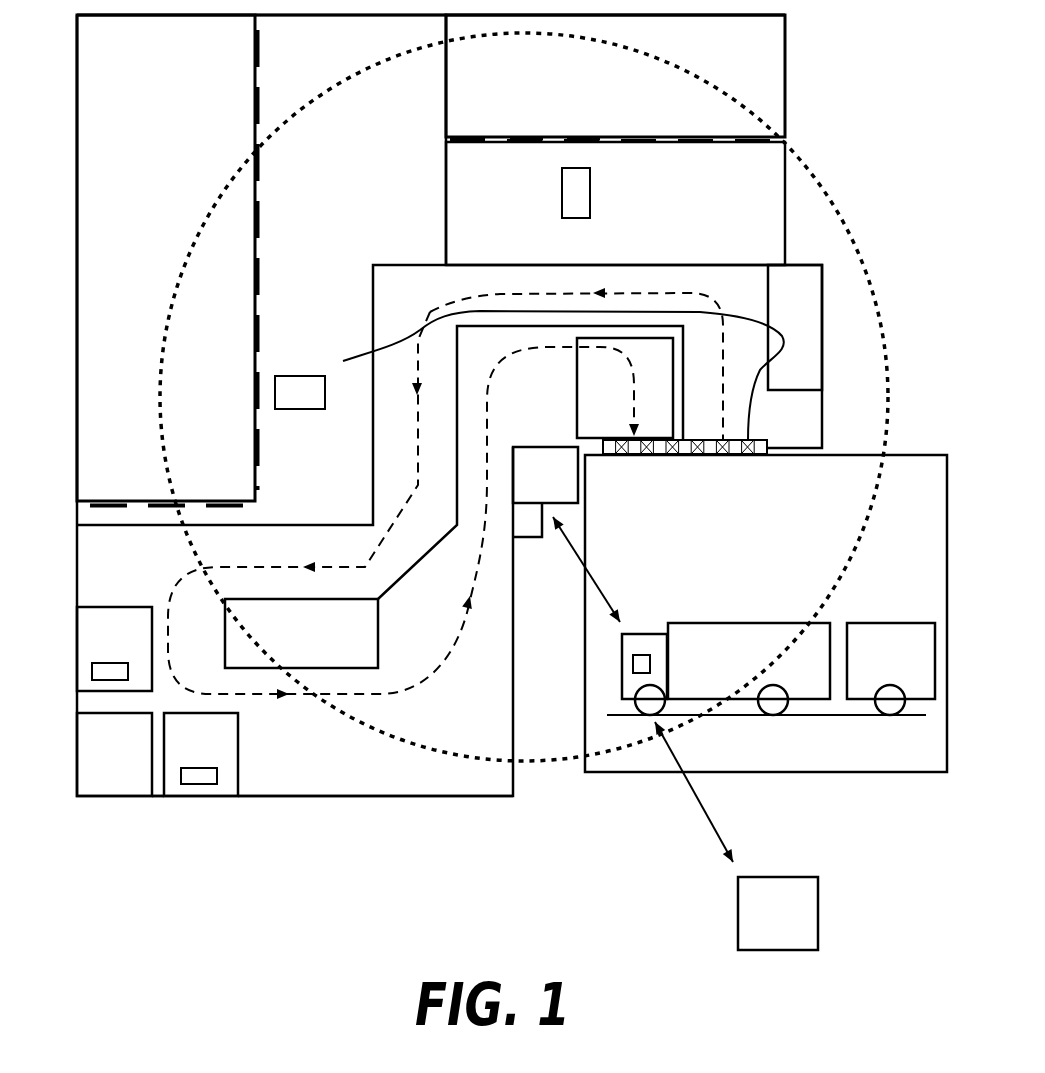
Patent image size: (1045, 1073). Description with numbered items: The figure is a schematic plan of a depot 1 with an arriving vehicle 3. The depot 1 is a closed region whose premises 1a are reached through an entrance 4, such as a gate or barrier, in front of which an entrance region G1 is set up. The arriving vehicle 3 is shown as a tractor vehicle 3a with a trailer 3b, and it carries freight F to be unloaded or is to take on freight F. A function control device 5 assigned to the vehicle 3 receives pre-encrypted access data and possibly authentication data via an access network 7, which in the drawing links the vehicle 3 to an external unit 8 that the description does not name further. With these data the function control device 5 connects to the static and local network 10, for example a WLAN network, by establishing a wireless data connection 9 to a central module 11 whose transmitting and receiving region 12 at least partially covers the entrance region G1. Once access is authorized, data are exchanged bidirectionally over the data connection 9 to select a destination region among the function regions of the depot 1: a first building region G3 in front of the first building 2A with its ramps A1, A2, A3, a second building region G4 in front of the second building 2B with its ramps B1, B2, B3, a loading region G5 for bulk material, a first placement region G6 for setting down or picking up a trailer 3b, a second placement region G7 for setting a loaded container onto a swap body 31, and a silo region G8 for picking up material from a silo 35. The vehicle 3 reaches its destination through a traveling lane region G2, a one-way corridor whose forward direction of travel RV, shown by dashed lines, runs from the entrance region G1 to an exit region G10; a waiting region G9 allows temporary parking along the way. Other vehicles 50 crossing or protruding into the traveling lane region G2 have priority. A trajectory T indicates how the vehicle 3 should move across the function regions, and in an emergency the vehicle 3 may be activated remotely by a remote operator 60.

The depot 1 is at (218, 862).
The premises 1a is at (273, 739).
The first building 2A is at (142, 79).
The second building 2B is at (763, 79).
The vehicle 3 is at (778, 630).
The tractor vehicle 3a is at (717, 672).
The trailer 3b is at (903, 672).
The entrance 4 is at (703, 455).
The function control device 5 is at (642, 655).
The access network 7 is at (698, 800).
The external computing unit 8 is at (786, 926).
The data connection 9 is at (597, 572).
The static and local network 10 is at (449, 727).
The central module 11 is at (555, 491).
The transmitting and receiving region 12 is at (190, 543).
The swap body 31 is at (92, 672).
The silo 35 is at (208, 784).
The other vehicles 50 is at (563, 190).
The remote operator 60 is at (525, 534).
The ramp A1 is at (253, 449).
The ramp A2 is at (253, 391).
The ramp A3 is at (253, 332).
The ramp B1 is at (467, 137).
The ramp B2 is at (524, 137).
The ramp B3 is at (583, 137).
The entrance region G1 is at (928, 502).
The traveling lane region G2 is at (736, 309).
The first building region G3 is at (386, 151).
The second building region G4 is at (735, 201).
The loading region G5 is at (127, 759).
The first placement region G6 is at (342, 649).
The second placement region G7 is at (127, 647).
The silo region G8 is at (213, 759).
The waiting region G9 is at (807, 317).
The exit region G10 is at (597, 410).
The trajectory T is at (360, 357).
The forward direction of travel RV is at (476, 298).
The freight F is at (863, 686).